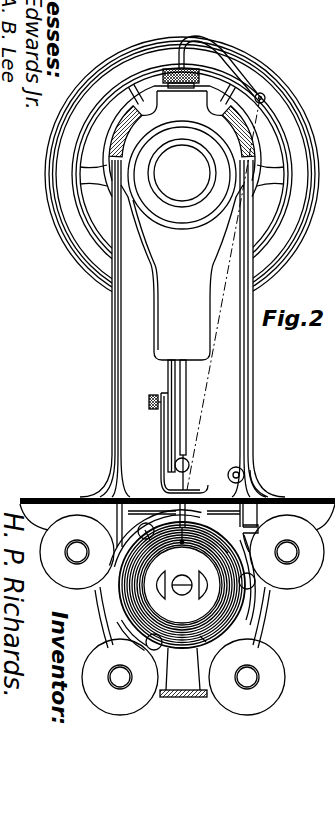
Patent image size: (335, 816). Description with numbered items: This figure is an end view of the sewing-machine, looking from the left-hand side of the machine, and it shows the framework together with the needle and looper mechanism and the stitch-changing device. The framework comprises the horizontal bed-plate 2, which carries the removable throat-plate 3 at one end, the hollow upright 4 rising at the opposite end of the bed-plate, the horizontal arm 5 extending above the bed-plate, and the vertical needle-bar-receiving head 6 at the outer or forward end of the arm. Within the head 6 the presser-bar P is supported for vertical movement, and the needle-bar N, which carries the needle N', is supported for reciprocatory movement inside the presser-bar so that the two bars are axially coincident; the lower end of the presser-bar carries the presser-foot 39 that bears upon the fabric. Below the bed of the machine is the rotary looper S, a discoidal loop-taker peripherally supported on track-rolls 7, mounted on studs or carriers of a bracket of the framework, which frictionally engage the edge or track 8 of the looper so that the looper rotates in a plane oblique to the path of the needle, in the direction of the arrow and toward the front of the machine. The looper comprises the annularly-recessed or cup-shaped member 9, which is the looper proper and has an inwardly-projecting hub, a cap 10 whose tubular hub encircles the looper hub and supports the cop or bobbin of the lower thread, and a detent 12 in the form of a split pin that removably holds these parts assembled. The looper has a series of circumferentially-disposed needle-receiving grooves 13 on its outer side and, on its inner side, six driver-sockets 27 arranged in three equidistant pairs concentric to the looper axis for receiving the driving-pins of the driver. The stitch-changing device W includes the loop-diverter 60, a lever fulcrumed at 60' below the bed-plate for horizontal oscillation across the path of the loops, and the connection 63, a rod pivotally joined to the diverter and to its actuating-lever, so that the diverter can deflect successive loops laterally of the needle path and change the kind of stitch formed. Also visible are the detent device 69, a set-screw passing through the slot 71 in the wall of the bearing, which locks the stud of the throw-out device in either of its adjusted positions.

The bed-plate 2 is at (183, 704).
The throat-plate 3 is at (76, 498).
The hollow upright 4 is at (254, 371).
The horizontal arm 5 is at (118, 137).
The needle-bar-receiving head 6 is at (182, 272).
The track-rolls 7 is at (182, 615).
The track 8 is at (187, 662).
The cup-shaped member 9 is at (150, 640).
The cap 10 is at (150, 588).
The detent 12 is at (185, 590).
The needle-receiving grooves 13 is at (244, 622).
The driver-sockets 27 is at (208, 642).
The presser-foot 39 is at (190, 484).
The loop-diverter 60 is at (178, 516).
The fulcrum of loop-diverter 60' is at (257, 549).
The connection 63 is at (262, 530).
The detent device 69 is at (232, 467).
The slot 71 is at (255, 478).
The presser-bar P is at (168, 370).
The needle-bar N is at (198, 425).
The needle N' is at (173, 443).
The rotary looper S is at (182, 585).
The stitch-changing device W is at (253, 509).